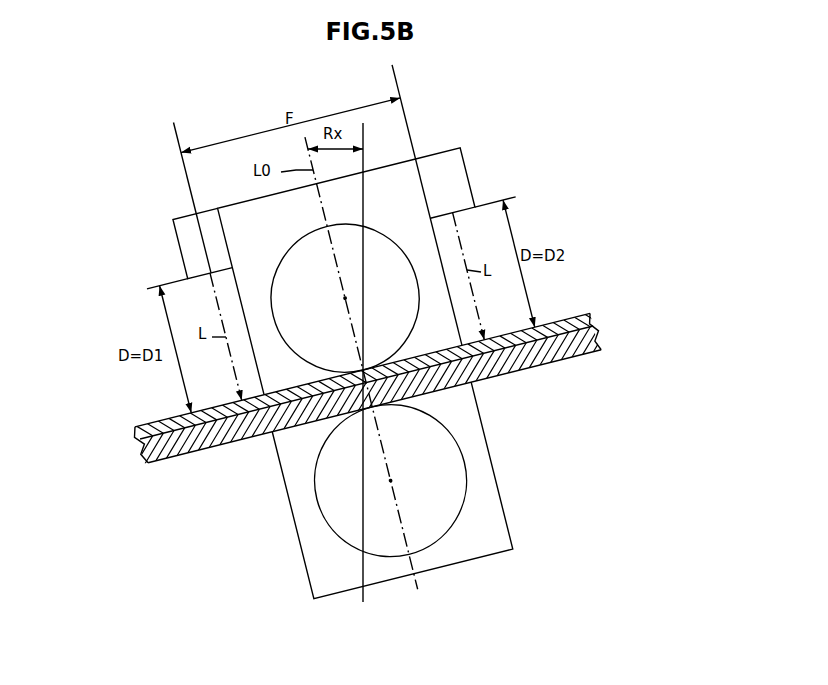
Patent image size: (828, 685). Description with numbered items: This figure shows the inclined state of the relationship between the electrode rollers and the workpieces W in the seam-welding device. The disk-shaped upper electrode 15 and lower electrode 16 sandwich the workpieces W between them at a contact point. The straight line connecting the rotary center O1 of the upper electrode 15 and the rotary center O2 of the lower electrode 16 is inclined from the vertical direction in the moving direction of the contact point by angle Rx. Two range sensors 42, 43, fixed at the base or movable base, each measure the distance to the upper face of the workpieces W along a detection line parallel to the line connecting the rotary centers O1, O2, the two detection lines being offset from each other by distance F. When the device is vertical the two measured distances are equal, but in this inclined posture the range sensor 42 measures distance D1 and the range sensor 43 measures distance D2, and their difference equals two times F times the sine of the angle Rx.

The upper electrode 15 is at (382, 232).
The lower electrode 16 is at (452, 440).
The range sensor 42 is at (181, 251).
The range sensor 43 is at (464, 176).
The workpieces W is at (574, 311).
The rotary center of the upper electrode O1 is at (345, 298).
The rotary center of the lower electrode O2 is at (391, 481).